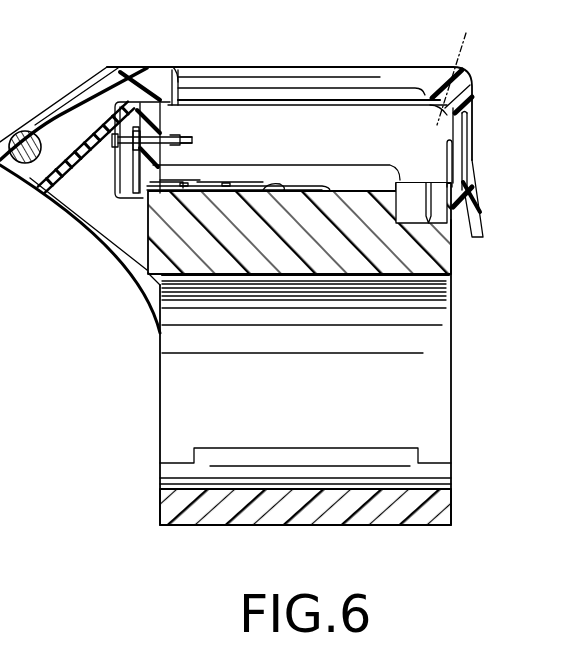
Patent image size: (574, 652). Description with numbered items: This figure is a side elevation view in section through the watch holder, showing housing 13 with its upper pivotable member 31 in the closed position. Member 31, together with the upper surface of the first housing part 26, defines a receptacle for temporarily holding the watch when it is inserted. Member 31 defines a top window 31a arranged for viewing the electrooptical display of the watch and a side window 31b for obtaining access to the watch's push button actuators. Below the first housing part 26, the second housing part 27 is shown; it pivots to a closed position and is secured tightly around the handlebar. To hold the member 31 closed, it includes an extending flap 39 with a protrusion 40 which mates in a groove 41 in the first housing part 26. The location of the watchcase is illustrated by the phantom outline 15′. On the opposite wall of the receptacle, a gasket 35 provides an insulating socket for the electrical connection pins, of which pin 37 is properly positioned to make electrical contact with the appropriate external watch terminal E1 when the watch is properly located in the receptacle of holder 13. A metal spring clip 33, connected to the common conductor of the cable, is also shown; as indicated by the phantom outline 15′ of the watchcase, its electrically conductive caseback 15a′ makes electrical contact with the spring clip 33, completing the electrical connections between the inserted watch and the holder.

The housing 13 is at (131, 350).
The phantom outline of watchcase 15′ is at (463, 66).
The electrically conductive caseback 15a′ is at (303, 186).
The first housing part 26 is at (142, 274).
The second housing part 27 is at (370, 536).
The second pivotable member 31 is at (452, 60).
The top window 31a is at (177, 82).
The side window 31b is at (476, 120).
The metal spring clip 33 is at (270, 186).
The gasket 35 is at (120, 170).
The electrical terminal pin 37 is at (153, 134).
The extending flap 39 is at (470, 192).
The protrusion 40 is at (447, 200).
The groove 41 is at (459, 248).
The external watch terminal E1 is at (182, 141).